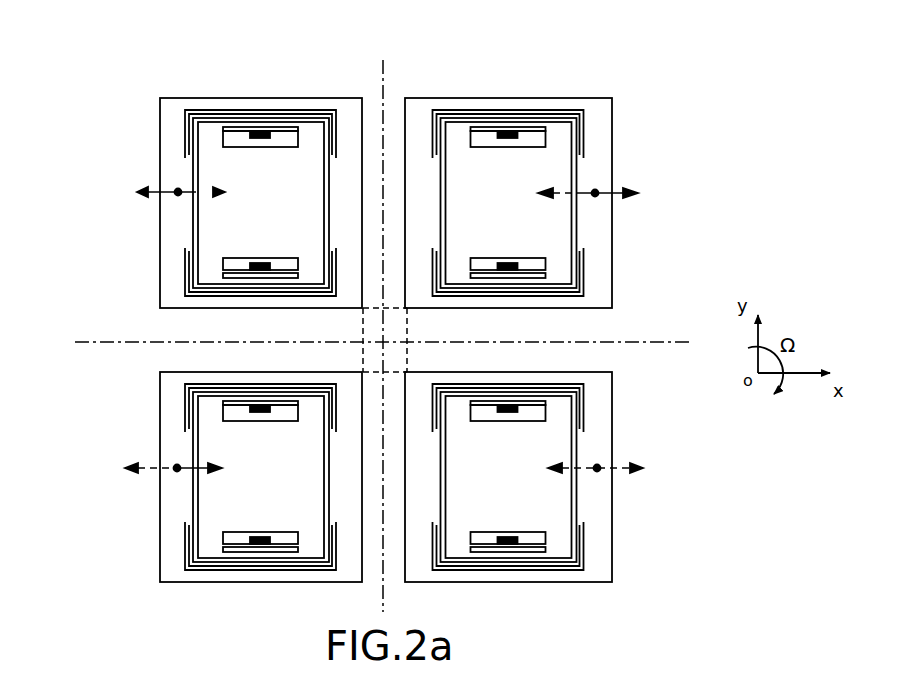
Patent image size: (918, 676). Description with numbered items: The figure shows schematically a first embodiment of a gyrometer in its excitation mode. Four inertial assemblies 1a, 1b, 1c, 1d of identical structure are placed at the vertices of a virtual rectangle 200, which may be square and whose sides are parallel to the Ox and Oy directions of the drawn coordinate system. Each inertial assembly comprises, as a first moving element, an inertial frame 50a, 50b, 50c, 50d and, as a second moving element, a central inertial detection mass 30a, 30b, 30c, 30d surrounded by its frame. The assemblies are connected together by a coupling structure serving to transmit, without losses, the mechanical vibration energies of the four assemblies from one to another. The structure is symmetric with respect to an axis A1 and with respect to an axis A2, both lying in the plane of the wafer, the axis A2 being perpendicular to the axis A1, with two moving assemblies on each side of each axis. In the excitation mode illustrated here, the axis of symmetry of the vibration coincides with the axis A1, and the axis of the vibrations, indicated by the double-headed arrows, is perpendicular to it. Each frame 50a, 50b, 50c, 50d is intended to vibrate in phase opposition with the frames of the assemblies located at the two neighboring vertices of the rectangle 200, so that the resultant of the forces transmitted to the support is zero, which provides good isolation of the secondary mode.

The inertial assembly 1a is at (118, 225).
The inertial assembly 1b is at (664, 150).
The inertial assembly 1c is at (654, 518).
The inertial assembly 1d is at (128, 488).
The detection mass 30a is at (220, 177).
The detection mass 30b is at (547, 223).
The detection mass 30c is at (552, 442).
The detection mass 30d is at (220, 505).
The inertial frame 50a is at (180, 174).
The inertial frame 50b is at (602, 217).
The inertial frame 50c is at (602, 487).
The inertial frame 50d is at (170, 495).
The virtual rectangle 200 is at (407, 330).
The axis of symmetry A1 is at (383, 95).
The axis of symmetry A2 is at (365, 363).